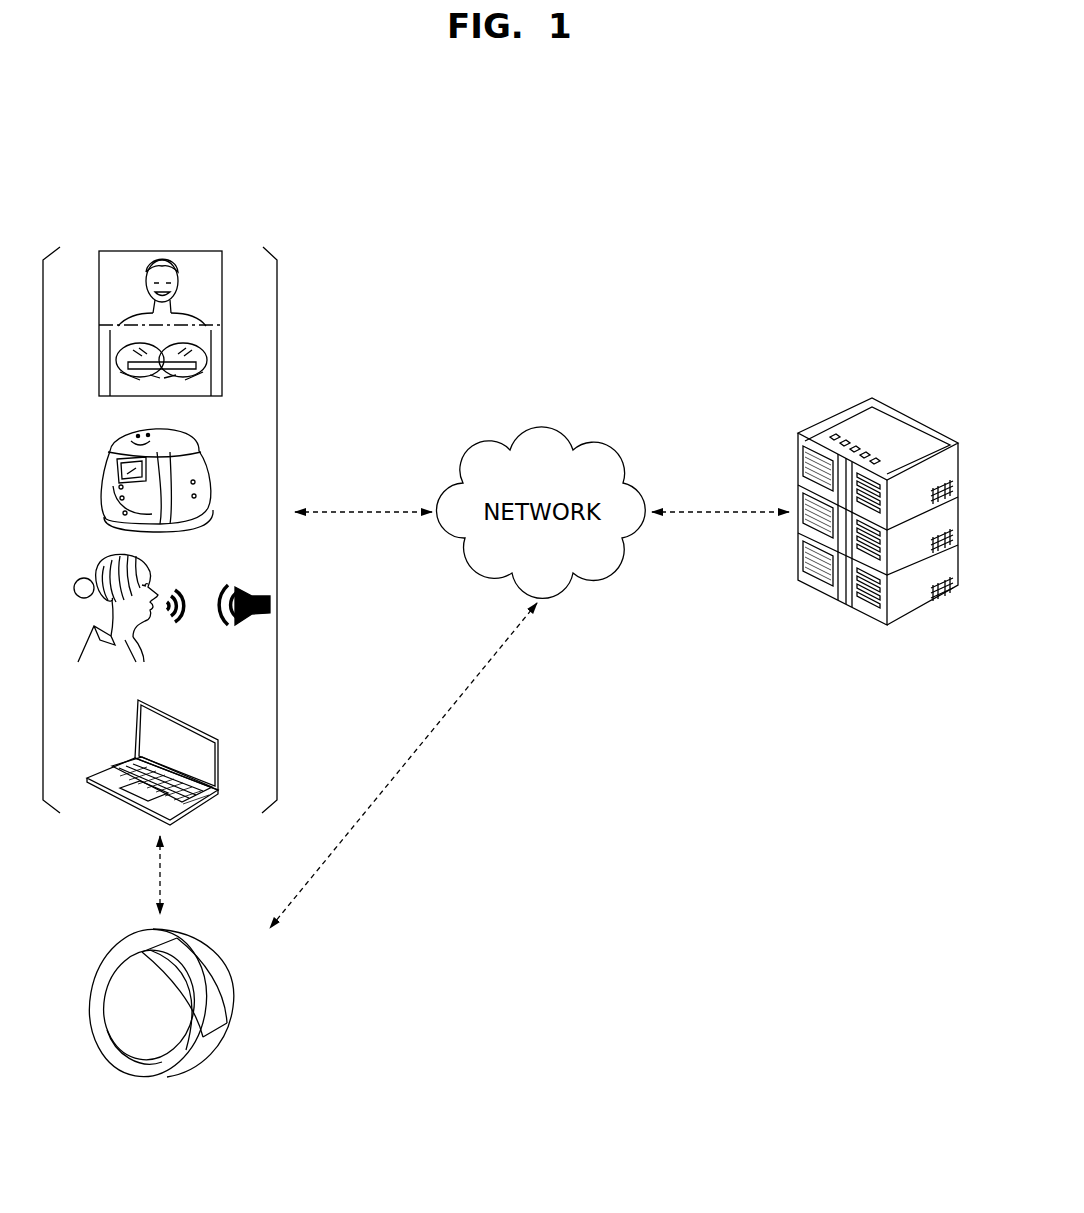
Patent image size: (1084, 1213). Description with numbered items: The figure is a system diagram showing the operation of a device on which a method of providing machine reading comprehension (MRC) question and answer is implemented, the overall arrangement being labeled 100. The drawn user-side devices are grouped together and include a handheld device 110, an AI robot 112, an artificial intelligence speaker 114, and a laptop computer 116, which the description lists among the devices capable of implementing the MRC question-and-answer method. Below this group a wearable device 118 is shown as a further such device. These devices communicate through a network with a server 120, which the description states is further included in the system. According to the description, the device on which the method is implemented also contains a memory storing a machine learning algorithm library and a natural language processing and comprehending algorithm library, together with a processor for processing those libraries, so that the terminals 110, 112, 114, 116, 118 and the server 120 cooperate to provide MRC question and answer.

The communication system 100 is at (277, 297).
The handheld device 110 is at (162, 252).
The AI robot 112 is at (190, 433).
The artificial intelligence speaker 114 is at (195, 567).
The laptop computer 116 is at (167, 705).
The wearable device 118 is at (207, 967).
The server 120 is at (833, 418).